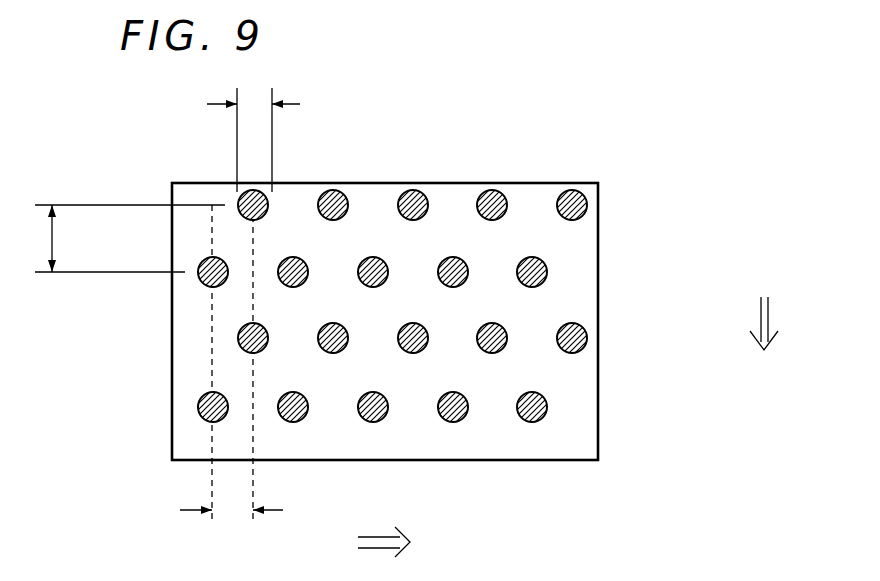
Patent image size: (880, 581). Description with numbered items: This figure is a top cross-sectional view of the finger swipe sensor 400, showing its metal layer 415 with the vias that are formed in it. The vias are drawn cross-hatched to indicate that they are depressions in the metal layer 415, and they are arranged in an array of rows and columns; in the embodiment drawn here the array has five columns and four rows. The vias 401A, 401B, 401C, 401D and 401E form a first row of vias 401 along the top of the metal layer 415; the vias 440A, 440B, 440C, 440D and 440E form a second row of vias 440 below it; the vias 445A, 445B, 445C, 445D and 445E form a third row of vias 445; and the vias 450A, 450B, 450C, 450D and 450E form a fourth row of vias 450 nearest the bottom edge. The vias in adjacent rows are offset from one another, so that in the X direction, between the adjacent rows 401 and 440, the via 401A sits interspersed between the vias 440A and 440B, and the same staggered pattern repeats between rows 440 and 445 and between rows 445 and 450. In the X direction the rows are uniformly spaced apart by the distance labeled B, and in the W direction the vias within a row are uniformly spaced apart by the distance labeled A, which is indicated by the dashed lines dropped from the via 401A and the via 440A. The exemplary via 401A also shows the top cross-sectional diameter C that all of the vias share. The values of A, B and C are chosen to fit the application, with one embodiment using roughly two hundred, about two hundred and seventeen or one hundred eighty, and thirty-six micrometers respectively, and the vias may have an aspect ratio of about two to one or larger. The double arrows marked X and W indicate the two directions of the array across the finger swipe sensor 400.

The finger swipe sensor 400 is at (560, 58).
The first row of vias 401 is at (622, 198).
The via 401A is at (270, 203).
The via 401B is at (346, 196).
The via 401C is at (425, 195).
The via 401D is at (505, 195).
The via 401E is at (582, 196).
The second row of vias 440 is at (622, 265).
The via 440A is at (200, 280).
The via 440B is at (308, 270).
The via 440C is at (388, 270).
The via 440D is at (468, 270).
The via 440E is at (547, 270).
The third row of vias 445 is at (622, 330).
The via 445A is at (238, 334).
The via 445B is at (318, 332).
The via 445C is at (398, 334).
The via 445D is at (477, 334).
The via 445E is at (557, 334).
The fourth row of vias 450 is at (622, 398).
The via 450A is at (198, 405).
The via 450B is at (308, 404).
The via 450C is at (388, 404).
The via 450D is at (468, 404).
The via 450E is at (547, 404).
The metal layer 415 is at (185, 438).